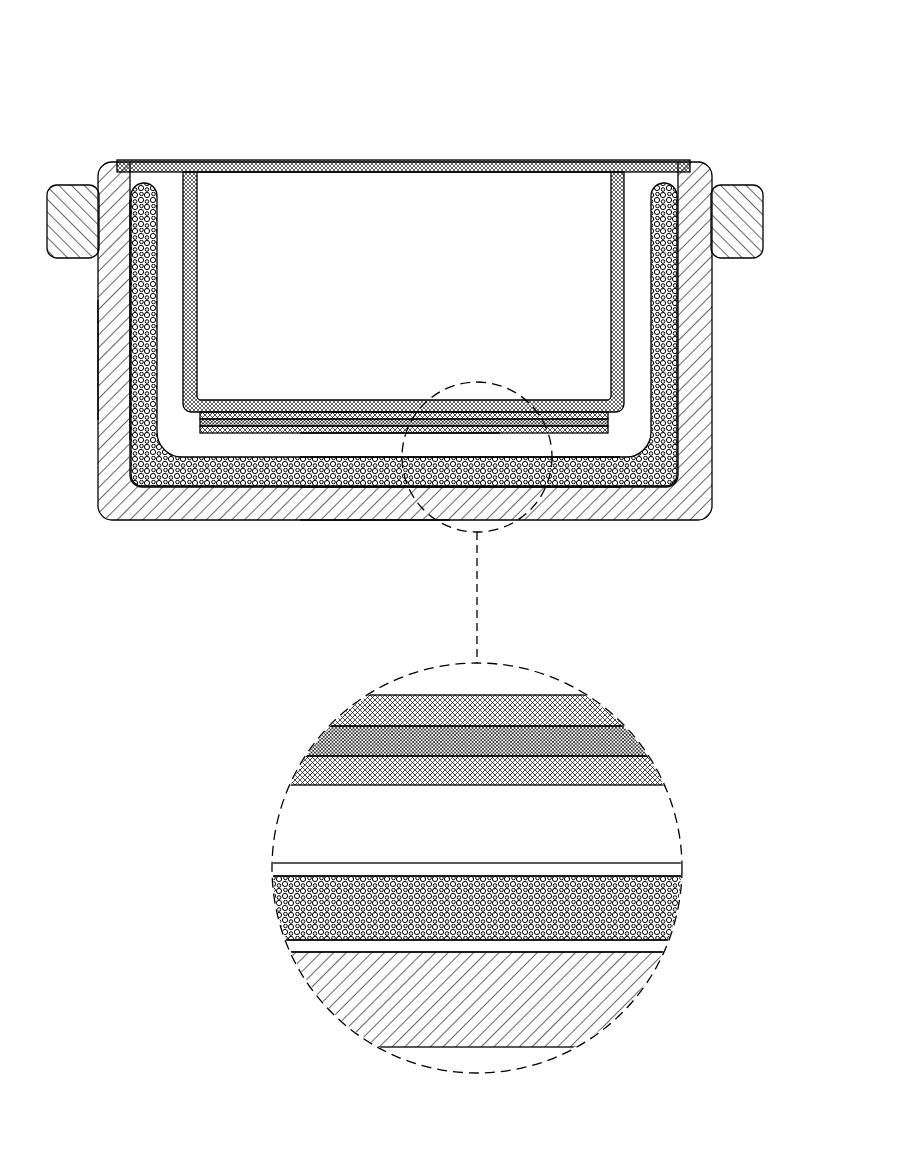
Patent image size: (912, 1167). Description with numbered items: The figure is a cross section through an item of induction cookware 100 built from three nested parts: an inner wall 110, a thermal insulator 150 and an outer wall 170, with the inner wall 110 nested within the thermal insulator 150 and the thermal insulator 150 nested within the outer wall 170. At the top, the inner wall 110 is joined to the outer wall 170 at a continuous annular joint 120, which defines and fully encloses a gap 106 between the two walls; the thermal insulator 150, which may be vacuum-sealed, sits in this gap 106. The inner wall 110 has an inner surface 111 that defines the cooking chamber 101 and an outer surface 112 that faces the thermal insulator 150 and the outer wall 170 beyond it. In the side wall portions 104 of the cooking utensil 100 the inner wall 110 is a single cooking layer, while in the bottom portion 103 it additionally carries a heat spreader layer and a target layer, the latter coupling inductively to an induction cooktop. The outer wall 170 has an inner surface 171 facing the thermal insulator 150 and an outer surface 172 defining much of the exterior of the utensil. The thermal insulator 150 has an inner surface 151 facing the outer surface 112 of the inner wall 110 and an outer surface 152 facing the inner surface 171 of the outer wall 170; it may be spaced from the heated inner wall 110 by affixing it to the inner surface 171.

The induction cookware 100 is at (122, 42).
The cooking chamber 101 is at (426, 261).
The bottom portion 103 is at (363, 531).
The side wall portions 104 is at (97, 358).
The gap 106 is at (180, 445).
The inner wall 110 is at (225, 442).
The inner surface 111 is at (257, 396).
The outer surface 112 is at (257, 440).
The continuous annular joint 120 is at (118, 160).
The thermal insulator 150 is at (618, 503).
The inner surface 151 is at (587, 450).
The outer surface 152 is at (588, 496).
The outer wall 170 is at (712, 287).
The inner surface 171 is at (134, 289).
The outer surface 172 is at (96, 288).